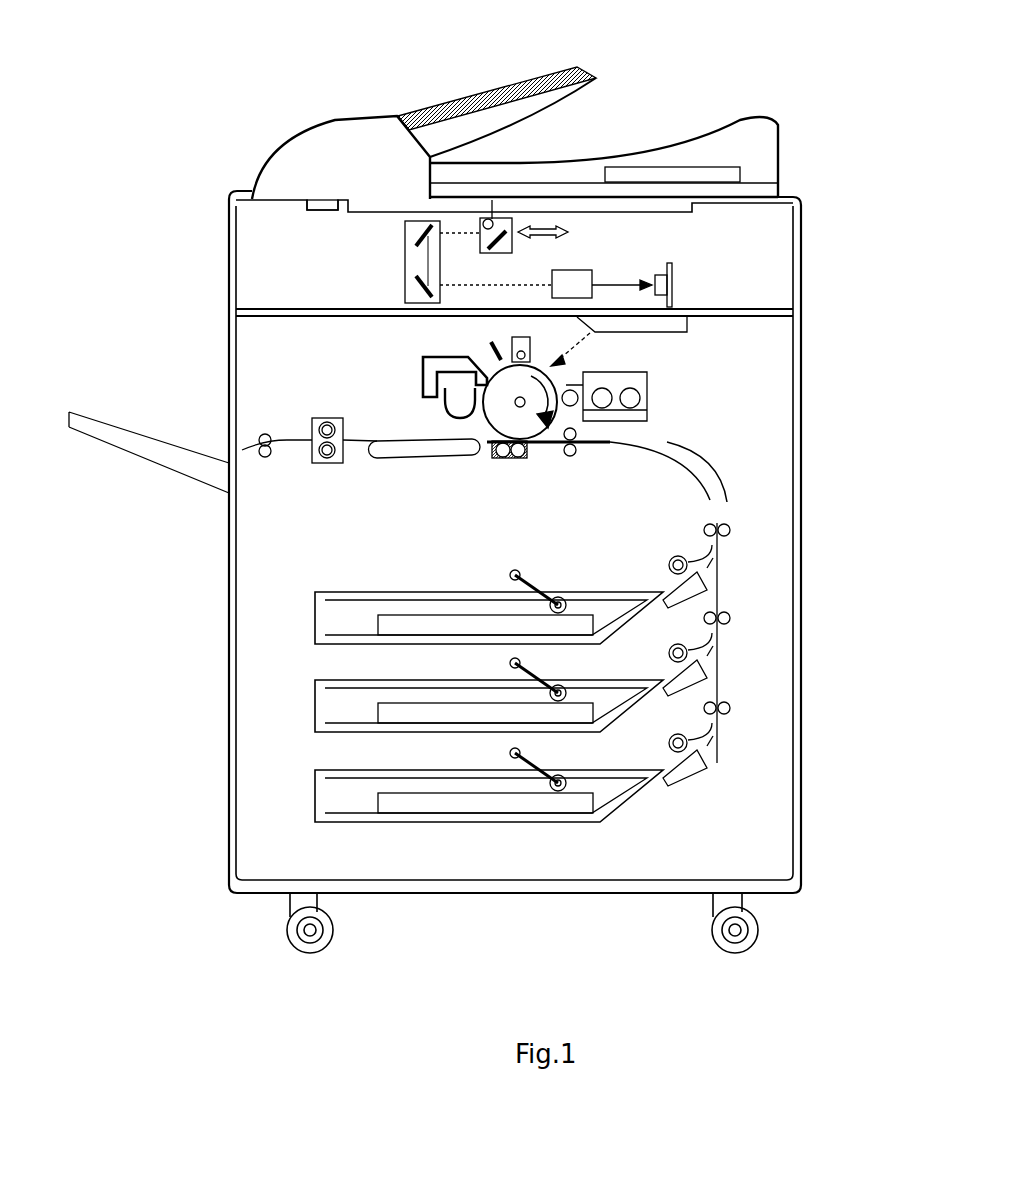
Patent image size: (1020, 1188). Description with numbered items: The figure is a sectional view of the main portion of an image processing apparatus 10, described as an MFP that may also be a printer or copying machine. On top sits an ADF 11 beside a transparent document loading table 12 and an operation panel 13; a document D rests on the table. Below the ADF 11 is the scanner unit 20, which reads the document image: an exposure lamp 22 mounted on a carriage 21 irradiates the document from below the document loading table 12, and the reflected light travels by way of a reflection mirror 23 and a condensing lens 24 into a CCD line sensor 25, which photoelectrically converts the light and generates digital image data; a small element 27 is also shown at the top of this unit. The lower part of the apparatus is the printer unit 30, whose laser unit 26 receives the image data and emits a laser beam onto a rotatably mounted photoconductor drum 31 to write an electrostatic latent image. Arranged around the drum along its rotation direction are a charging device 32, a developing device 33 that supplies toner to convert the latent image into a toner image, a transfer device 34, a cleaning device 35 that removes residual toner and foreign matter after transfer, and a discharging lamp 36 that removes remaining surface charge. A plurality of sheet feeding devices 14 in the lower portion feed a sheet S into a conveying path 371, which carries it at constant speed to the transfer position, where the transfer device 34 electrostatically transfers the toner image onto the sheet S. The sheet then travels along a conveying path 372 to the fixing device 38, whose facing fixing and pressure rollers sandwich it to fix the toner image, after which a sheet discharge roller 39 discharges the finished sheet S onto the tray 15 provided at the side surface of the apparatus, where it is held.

The image processing apparatus 10 is at (478, 54).
The ADF 11 is at (327, 118).
The document loading table 12 is at (571, 205).
The operation panel 13 is at (677, 165).
The document D is at (527, 190).
The sheet feeding device 14 is at (474, 592).
The tray 15 is at (144, 432).
The scanner unit 20 is at (797, 253).
The carriage 21 is at (498, 253).
The exposure lamp 22 is at (482, 223).
The reflection mirror 23 is at (405, 259).
The condensing lens 24 is at (573, 270).
The CCD line sensor 25 is at (673, 281).
The laser unit 26 is at (692, 332).
The document sensor 27 is at (324, 212).
The printer unit 30 is at (797, 426).
The photoconductor drum 31 is at (563, 370).
The charging device 32 is at (531, 345).
The developing device 33 is at (648, 386).
The transfer device 34 is at (510, 460).
The cleaning device 35 is at (423, 379).
The discharging lamp 36 is at (488, 347).
The conveying path 371 is at (663, 450).
The conveying path 372 is at (426, 459).
The fixing device 38 is at (327, 417).
The sheet discharge roller 39 is at (268, 460).
The sheet S is at (617, 443).